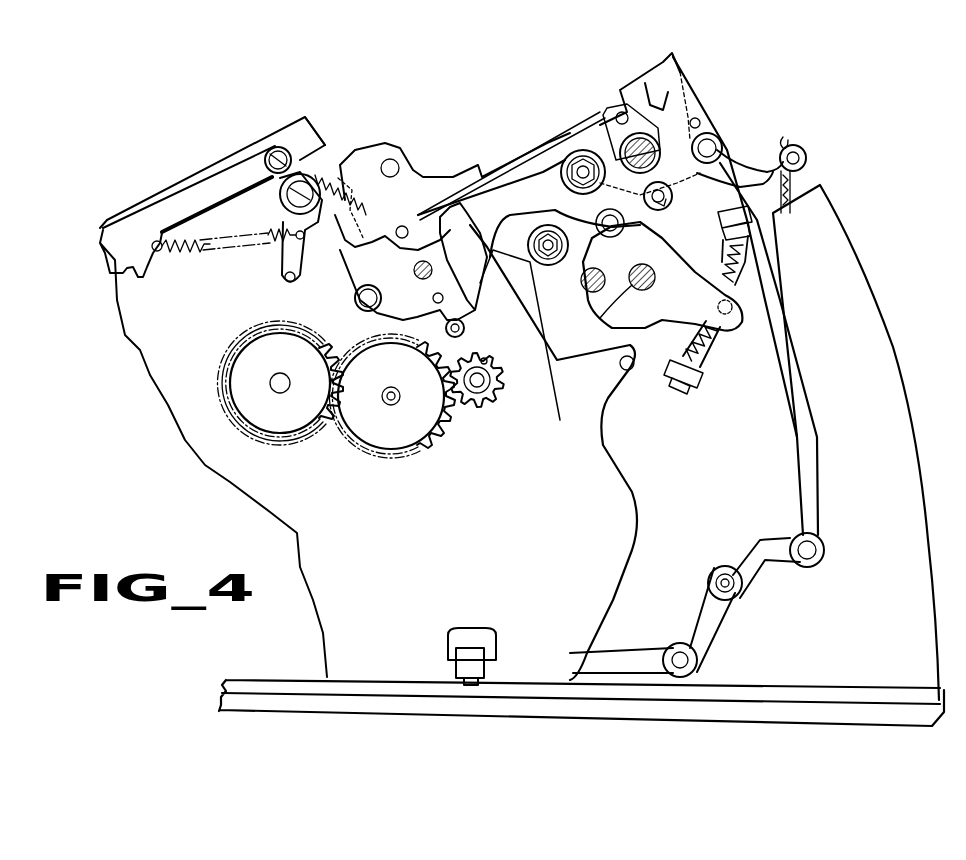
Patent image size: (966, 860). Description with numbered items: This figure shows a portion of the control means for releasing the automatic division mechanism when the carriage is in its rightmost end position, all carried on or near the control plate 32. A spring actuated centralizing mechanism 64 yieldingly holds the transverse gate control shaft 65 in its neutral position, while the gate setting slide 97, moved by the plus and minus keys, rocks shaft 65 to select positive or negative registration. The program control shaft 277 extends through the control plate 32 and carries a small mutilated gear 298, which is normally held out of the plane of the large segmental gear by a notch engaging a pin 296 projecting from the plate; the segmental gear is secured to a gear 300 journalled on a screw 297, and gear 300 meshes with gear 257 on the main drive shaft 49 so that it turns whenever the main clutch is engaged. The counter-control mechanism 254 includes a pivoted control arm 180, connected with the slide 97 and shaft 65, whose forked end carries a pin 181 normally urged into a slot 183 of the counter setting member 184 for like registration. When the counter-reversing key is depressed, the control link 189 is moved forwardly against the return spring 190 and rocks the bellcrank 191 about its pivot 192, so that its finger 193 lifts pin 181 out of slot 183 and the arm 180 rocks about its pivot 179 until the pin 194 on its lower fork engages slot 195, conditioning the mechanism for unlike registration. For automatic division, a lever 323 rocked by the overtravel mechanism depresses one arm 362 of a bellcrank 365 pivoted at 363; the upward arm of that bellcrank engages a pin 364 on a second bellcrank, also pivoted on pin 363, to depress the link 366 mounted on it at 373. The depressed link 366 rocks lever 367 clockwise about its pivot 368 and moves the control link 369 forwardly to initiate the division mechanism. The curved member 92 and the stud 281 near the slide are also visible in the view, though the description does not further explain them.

The control plate 32 is at (602, 463).
The main drive shaft 49 is at (279, 382).
The centralizing mechanism 64 is at (728, 338).
The gate control shaft 65 is at (600, 318).
The curved arm 92 is at (858, 298).
The gate setting slide 97 is at (526, 252).
The pivot 179 is at (625, 155).
The control arm 180 is at (493, 221).
The pin 181 is at (402, 225).
The slot 183 is at (412, 215).
The counter setting member 184 is at (402, 270).
The control link 189 is at (201, 206).
The return spring 190 is at (178, 252).
The bellcrank 191 is at (272, 226).
The pivot 192 is at (292, 197).
The finger 193 is at (384, 236).
The pin 194 is at (470, 330).
The slot 195 is at (433, 299).
The counter-control mechanism 254 is at (424, 198).
The gear 257 is at (280, 386).
The program control shaft 277 is at (480, 385).
The stud 281 is at (556, 250).
The pin 296 is at (484, 358).
The screw 297 is at (391, 402).
The small mutilated gear 298 is at (507, 380).
The gear 300 is at (402, 409).
The lever 323 is at (783, 137).
The arm 362 is at (767, 177).
The pivot pin 363 is at (664, 198).
The pin 364 is at (700, 121).
The bellcrank 365 is at (664, 62).
The link 366 is at (781, 298).
The lever 367 is at (736, 622).
The pivot 368 is at (721, 577).
The control link 369 is at (609, 658).
The pivot 373 is at (722, 140).